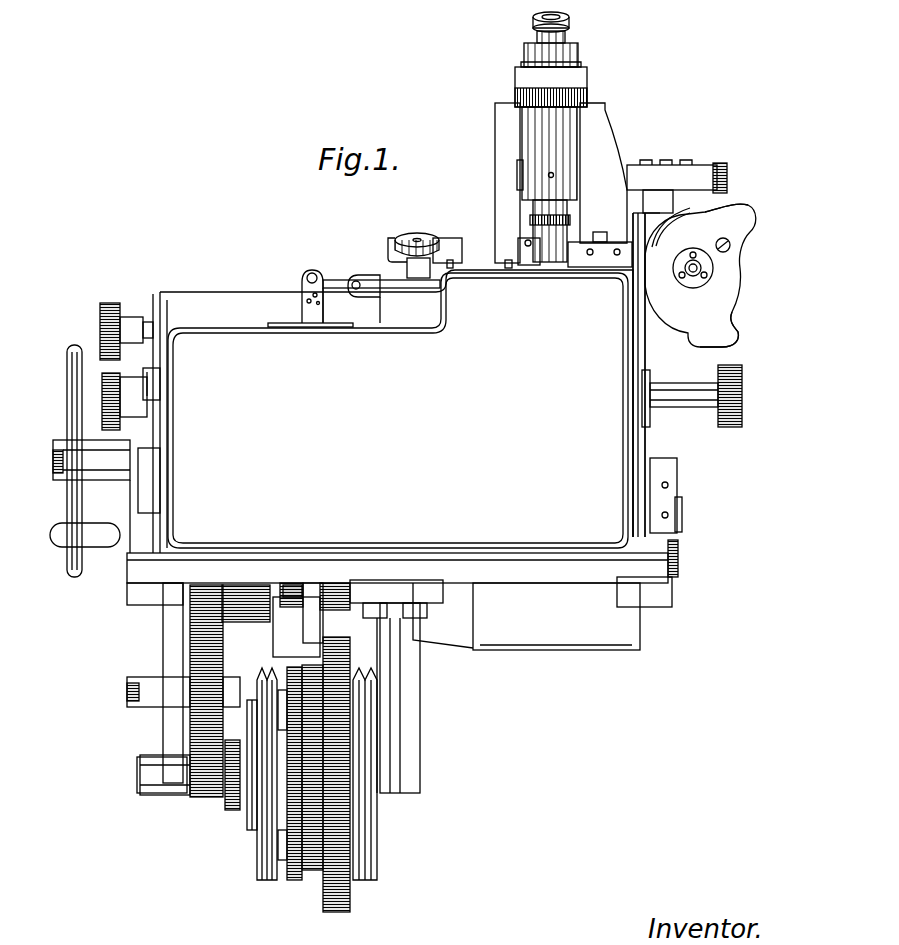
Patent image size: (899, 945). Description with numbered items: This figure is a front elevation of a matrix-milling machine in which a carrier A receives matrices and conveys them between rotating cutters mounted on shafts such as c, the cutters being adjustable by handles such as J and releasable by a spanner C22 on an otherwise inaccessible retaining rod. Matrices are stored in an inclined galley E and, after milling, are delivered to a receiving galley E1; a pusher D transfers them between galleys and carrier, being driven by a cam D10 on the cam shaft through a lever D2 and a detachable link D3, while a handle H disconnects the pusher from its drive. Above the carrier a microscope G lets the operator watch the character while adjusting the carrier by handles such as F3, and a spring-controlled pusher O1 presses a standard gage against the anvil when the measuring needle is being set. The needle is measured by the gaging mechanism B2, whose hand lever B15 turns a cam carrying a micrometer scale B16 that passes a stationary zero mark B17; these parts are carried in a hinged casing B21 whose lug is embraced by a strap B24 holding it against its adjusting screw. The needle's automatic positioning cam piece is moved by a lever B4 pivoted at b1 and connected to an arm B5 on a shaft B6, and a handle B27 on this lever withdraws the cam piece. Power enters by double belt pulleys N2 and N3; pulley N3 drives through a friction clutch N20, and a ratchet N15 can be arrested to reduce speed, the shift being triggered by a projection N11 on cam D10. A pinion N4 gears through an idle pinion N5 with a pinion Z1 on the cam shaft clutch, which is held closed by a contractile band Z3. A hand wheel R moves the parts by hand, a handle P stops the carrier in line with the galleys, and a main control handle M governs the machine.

The galley E is at (500, 118).
The receiving galley E1 is at (600, 117).
The microscope G is at (520, 146).
The cutter shaft c is at (517, 172).
The carrier A is at (526, 252).
The cutter adjusting handle J is at (415, 236).
The pusher D is at (405, 289).
The lever D2 is at (308, 320).
The detachable link D3 is at (343, 278).
The spring controlled pusher O1 is at (456, 276).
The strap B24 is at (660, 171).
The zero mark B17 is at (700, 218).
The hand lever B15 is at (762, 205).
The micrometer scale B16 is at (660, 238).
The gaging mechanism B2 is at (754, 240).
The lever B4 is at (640, 334).
The casing B21 is at (740, 330).
The handle B27 is at (642, 385).
The pivot b1 is at (656, 405).
The arm B5 is at (670, 480).
The shaft B6 is at (670, 516).
The spanner C22 is at (110, 333).
The hand wheel R is at (70, 364).
The handle F3 is at (110, 393).
The handle H is at (152, 386).
The handle P is at (150, 462).
The main control handle M is at (60, 532).
The projection N11 is at (296, 582).
The cam D10 is at (342, 592).
The pinion Z1 is at (192, 614).
The contractile band Z3 is at (250, 622).
The idle pinion N5 is at (200, 706).
The pinion N4 is at (212, 798).
The friction clutch N20 is at (252, 808).
The pulley N3 is at (264, 856).
The ratchet N15 is at (296, 878).
The pulley N2 is at (372, 864).